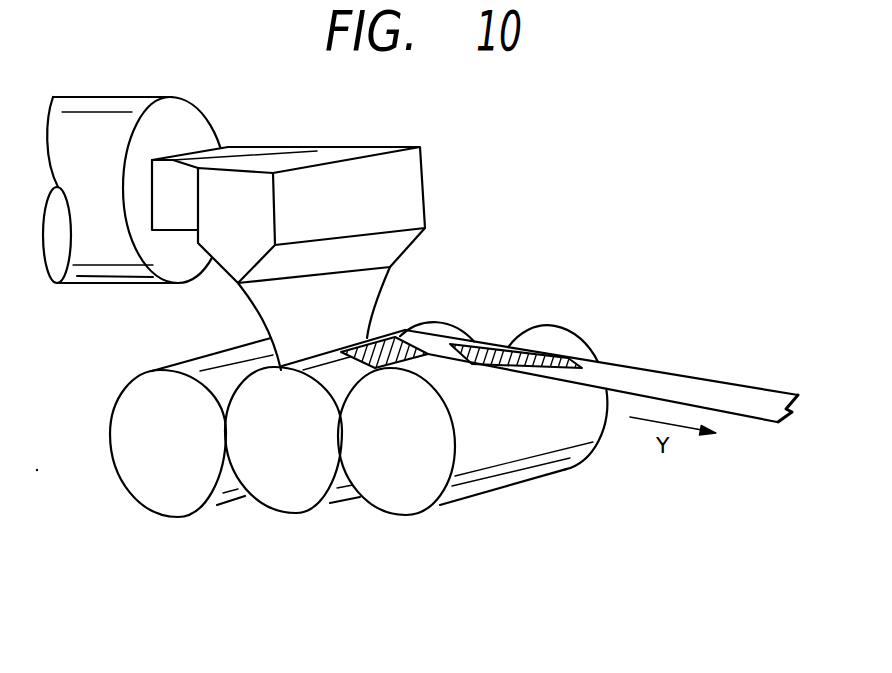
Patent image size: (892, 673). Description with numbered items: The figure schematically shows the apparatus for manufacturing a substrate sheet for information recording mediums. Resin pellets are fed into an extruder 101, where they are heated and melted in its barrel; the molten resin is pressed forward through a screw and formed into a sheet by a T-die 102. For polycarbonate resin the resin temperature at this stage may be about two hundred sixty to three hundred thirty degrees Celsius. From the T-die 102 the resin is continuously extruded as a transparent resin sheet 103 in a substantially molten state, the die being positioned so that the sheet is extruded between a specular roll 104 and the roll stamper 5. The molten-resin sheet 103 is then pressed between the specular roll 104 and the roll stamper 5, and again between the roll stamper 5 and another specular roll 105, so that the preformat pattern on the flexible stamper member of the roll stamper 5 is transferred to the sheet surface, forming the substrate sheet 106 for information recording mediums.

The extruder 101 is at (107, 270).
The T-die 102 is at (400, 190).
The transparent resin sheet 103 is at (270, 315).
The specular roll 104 is at (155, 488).
The roll stamper 5 is at (280, 496).
The specular roll 105 is at (387, 490).
The substrate sheet 106 is at (660, 380).